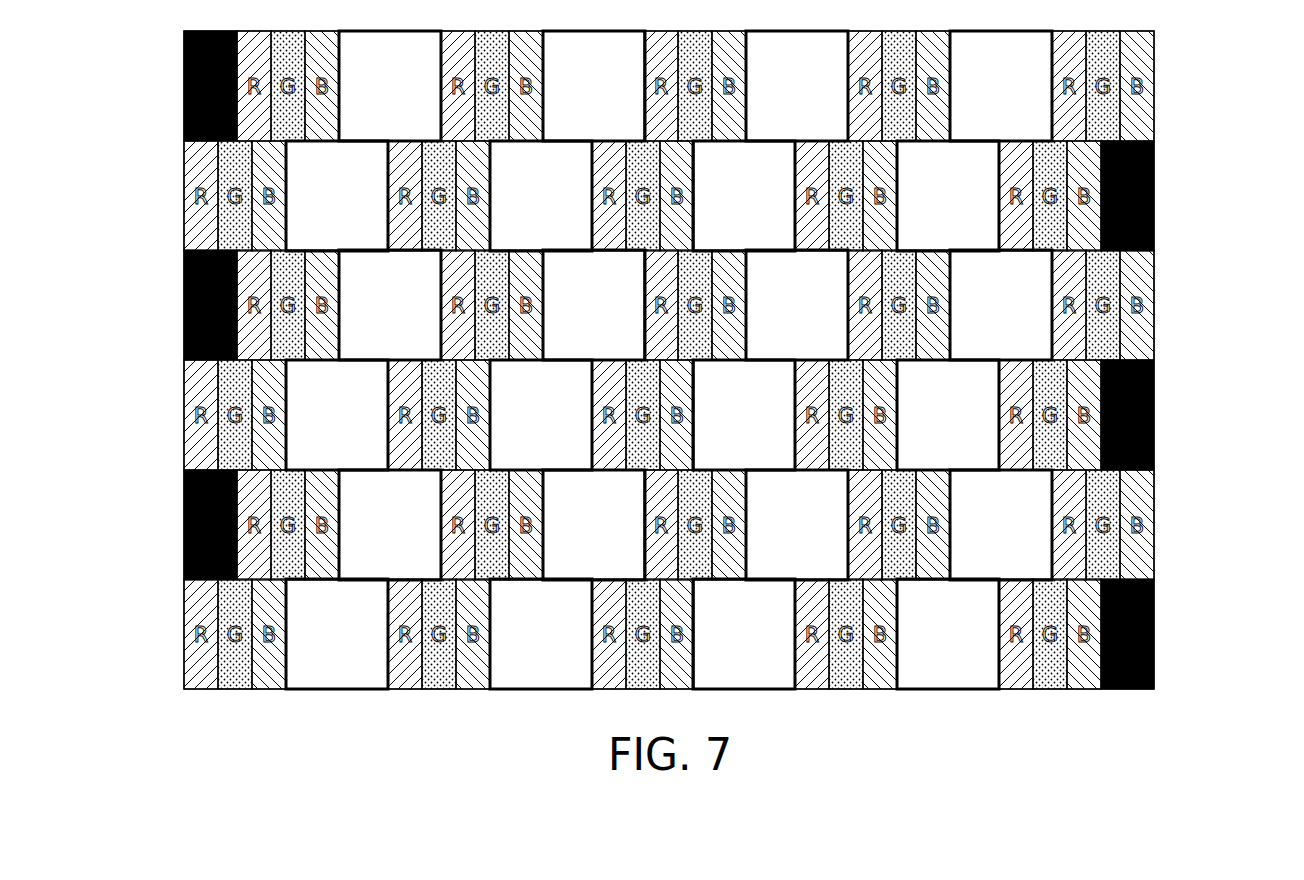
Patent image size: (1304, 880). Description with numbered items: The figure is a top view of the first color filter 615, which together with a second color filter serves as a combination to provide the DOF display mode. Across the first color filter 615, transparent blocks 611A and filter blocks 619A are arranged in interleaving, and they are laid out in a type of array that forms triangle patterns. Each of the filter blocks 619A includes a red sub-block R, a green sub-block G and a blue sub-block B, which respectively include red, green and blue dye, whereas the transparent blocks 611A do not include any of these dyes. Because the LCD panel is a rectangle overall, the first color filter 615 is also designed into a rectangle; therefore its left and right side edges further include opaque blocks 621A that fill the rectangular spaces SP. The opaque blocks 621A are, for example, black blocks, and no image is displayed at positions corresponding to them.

The first color filter 615 is at (1236, 731).
The filter blocks 619A is at (240, 690).
The transparent blocks 611A is at (340, 690).
The opaque blocks 621A is at (184, 88).